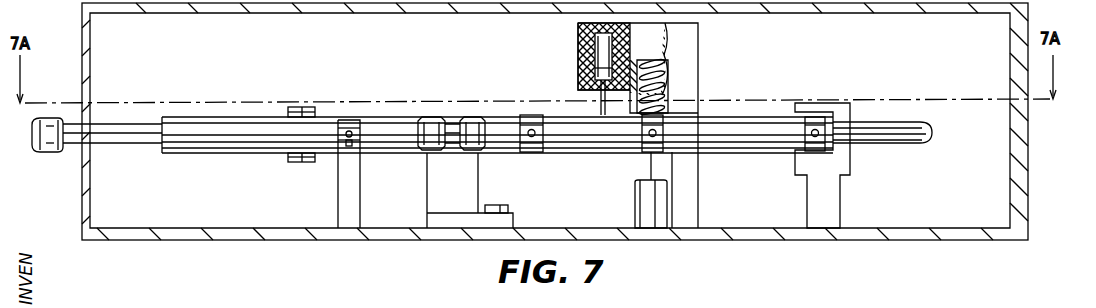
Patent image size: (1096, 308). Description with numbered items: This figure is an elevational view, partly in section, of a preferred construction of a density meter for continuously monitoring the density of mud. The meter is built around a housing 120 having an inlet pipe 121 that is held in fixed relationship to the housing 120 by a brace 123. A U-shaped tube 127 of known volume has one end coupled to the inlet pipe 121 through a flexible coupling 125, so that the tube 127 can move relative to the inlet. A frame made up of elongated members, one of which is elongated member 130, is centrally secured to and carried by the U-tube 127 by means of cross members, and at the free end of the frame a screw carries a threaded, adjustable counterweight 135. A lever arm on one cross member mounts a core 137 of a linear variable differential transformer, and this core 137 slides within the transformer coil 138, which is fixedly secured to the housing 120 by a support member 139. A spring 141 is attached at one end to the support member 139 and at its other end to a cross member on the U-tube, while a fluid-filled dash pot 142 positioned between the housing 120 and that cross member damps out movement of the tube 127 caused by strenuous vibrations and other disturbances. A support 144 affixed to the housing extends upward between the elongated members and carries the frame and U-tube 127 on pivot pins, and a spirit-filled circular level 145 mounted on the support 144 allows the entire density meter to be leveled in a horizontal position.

The housing 120 is at (445, 235).
The inlet pipe 121 is at (50, 153).
The brace 123 is at (337, 203).
The flexible coupling 125 is at (432, 118).
The U-shaped tube 127 is at (930, 135).
The elongated member 130 is at (733, 147).
The adjustable counterweight 135 is at (304, 107).
The core 137 is at (598, 92).
The coil 138 is at (578, 42).
The support member 139 is at (692, 40).
The spring 141 is at (675, 92).
The dash pot 142 is at (643, 190).
The support 144 is at (443, 193).
The circular level 145 is at (493, 206).